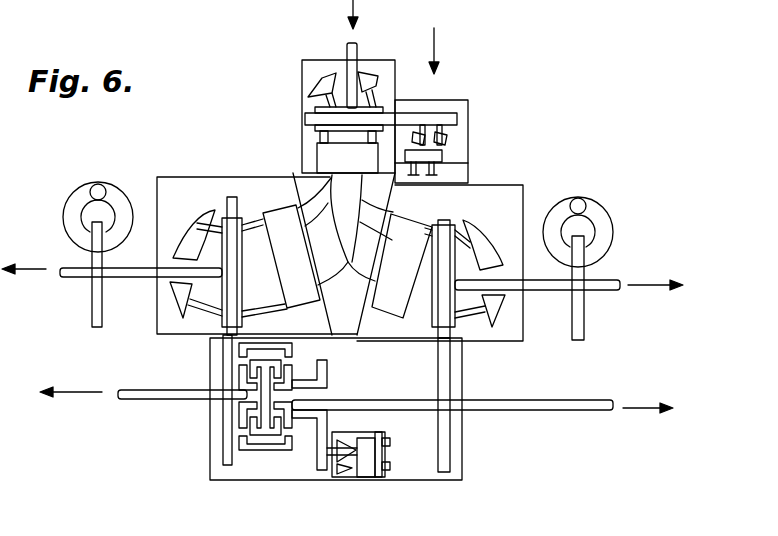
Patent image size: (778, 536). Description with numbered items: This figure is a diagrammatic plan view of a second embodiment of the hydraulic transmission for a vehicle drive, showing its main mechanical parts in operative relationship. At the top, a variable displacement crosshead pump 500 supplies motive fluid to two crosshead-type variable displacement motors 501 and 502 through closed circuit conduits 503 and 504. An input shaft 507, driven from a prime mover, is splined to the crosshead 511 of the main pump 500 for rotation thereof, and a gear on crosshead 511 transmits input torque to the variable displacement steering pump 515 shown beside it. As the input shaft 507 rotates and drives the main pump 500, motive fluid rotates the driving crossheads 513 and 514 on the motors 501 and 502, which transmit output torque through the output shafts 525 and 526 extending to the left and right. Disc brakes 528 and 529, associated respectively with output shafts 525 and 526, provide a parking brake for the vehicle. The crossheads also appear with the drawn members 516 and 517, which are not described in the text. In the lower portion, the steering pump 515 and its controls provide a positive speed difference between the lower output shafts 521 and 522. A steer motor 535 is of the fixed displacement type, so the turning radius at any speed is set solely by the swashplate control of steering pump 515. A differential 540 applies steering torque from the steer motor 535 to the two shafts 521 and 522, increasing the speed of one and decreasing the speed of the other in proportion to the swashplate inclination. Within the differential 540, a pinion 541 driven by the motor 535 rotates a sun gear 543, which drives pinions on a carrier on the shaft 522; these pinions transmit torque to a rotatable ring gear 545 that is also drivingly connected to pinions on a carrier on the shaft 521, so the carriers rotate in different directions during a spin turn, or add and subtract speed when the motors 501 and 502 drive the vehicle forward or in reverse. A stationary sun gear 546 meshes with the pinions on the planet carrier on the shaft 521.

The variable displacement crosshead pump 500 is at (316, 148).
The crosshead-type variable displacement motor 501 is at (300, 177).
The crosshead-type variable displacement motor 502 is at (430, 222).
The closed circuit conduit 503 is at (320, 175).
The closed circuit conduit 504 is at (360, 204).
The input shaft 507 is at (353, 48).
The crosshead 511 is at (385, 105).
The driving crosshead 513 is at (240, 290).
The driving crosshead 514 is at (456, 340).
The steering pump 515 is at (445, 151).
The left shaft extension 516 is at (228, 350).
The right shaft extension 517 is at (452, 384).
The output shaft 521 is at (150, 401).
The output shaft 522 is at (541, 411).
The output shaft 525 is at (75, 268).
The output shaft 526 is at (605, 280).
The disc brake 528 is at (84, 188).
The disc brake 529 is at (598, 202).
The steer motor 535 is at (369, 478).
The differential 540 is at (266, 453).
The pinion 541 is at (307, 471).
The sun gear 543 is at (305, 381).
The rotatable ring gear 545 is at (265, 343).
The stationary sun gear 546 is at (245, 387).